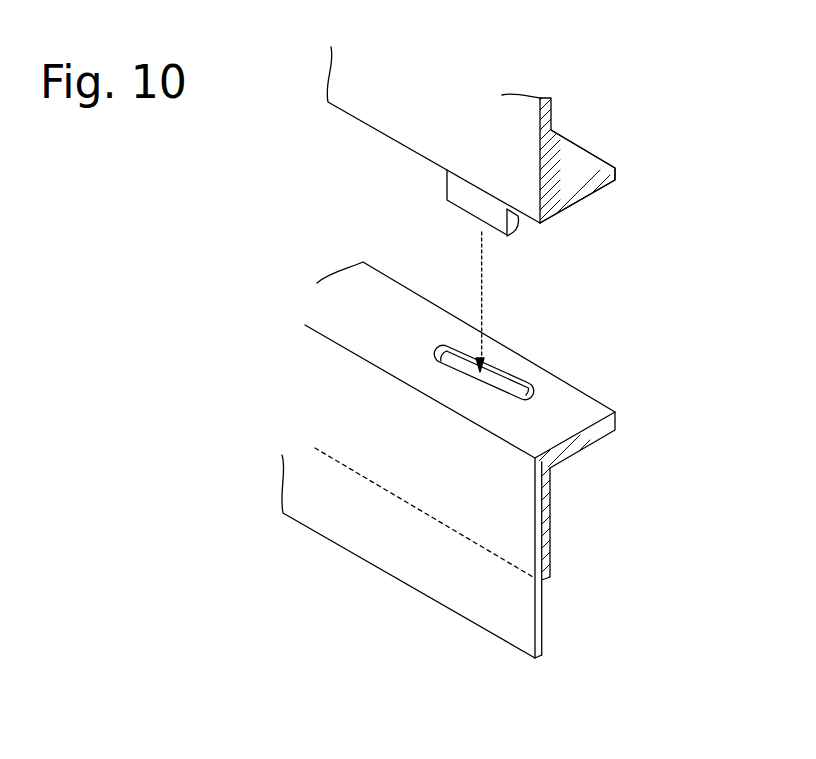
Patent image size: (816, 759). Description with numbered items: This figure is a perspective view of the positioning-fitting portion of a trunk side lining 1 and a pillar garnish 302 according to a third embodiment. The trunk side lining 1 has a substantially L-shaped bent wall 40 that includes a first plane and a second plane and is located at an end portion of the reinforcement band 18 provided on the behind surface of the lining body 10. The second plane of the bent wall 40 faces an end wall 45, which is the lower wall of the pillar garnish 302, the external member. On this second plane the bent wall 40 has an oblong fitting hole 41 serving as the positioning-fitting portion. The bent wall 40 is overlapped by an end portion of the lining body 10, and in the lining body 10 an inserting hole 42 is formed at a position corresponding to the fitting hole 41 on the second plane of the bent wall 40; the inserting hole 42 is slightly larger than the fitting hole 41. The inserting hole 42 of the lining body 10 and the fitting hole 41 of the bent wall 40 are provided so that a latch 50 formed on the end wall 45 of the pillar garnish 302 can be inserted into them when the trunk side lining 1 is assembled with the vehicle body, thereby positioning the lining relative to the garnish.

The trunk side lining 1 is at (501, 443).
The lining body 10 is at (360, 533).
The reinforcement band 18 is at (460, 540).
The bent wall 40 is at (553, 407).
The fitting hole 41 is at (500, 389).
The inserting hole 42 is at (456, 344).
The end wall 45 is at (583, 202).
The latch 50 is at (446, 185).
The pillar garnish 302 is at (554, 166).